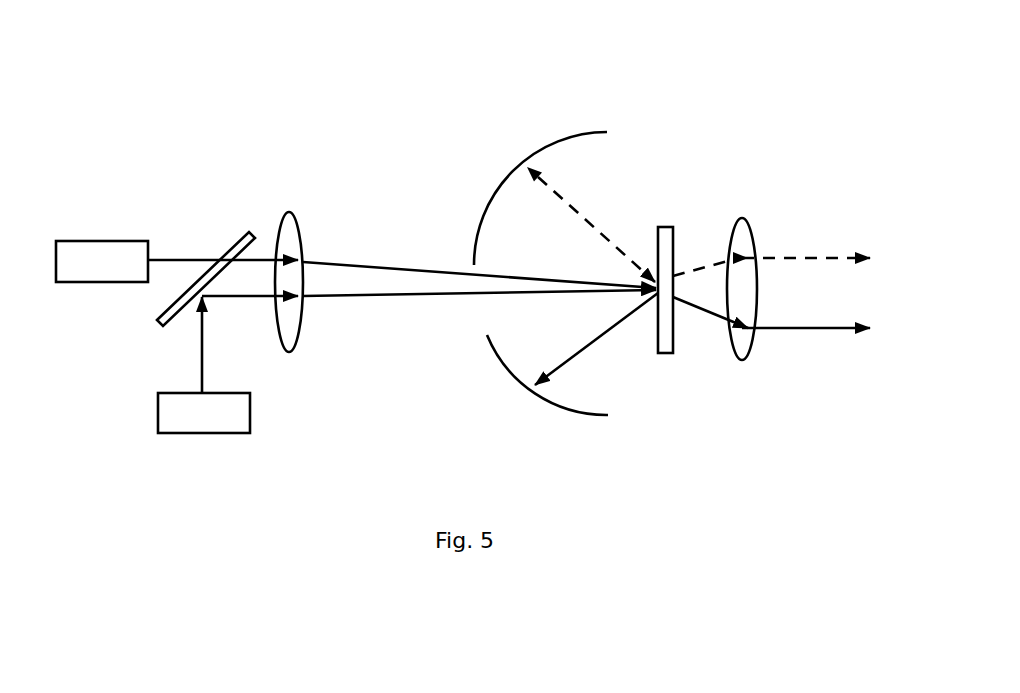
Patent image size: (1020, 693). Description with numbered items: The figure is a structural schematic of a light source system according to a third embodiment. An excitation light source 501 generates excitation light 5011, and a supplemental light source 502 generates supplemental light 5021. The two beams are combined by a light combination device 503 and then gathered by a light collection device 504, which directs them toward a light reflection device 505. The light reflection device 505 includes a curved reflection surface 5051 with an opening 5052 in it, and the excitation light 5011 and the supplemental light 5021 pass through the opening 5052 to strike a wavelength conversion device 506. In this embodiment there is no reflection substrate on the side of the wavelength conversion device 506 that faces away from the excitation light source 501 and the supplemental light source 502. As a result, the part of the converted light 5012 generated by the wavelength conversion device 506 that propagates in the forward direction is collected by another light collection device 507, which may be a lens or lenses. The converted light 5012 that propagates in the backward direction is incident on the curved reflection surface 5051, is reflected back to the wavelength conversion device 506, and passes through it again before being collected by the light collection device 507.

The excitation light source 501 is at (118, 250).
The excitation light 5011 is at (173, 260).
The converted light 5012 is at (585, 217).
The supplemental light source 502 is at (200, 435).
The supplemental light 5021 is at (202, 350).
The light combination device 503 is at (248, 236).
The light collection device 504 is at (287, 212).
The light reflection device 505 is at (502, 242).
The curved reflection surface 5051 is at (557, 143).
The opening 5052 is at (480, 315).
The wavelength conversion device 506 is at (668, 228).
The light collection device 507 is at (745, 220).